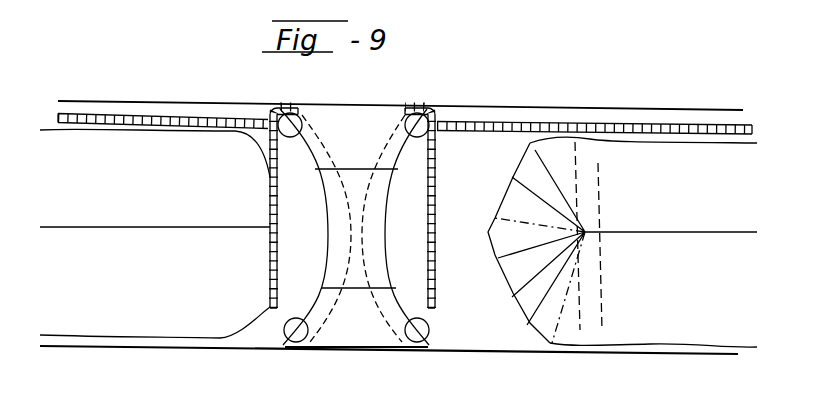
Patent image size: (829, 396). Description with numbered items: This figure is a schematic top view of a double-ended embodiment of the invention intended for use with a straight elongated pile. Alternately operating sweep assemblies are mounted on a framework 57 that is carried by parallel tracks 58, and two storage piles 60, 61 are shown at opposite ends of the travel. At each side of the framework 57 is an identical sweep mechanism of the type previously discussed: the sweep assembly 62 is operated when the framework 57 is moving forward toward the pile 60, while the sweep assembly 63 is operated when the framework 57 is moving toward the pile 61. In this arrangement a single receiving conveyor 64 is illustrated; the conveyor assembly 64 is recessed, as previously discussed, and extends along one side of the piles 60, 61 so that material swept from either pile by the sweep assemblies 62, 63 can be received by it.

The framework 57 is at (327, 222).
The parallel tracks 58 is at (409, 349).
The storage pile 60 is at (198, 206).
The storage pile 61 is at (688, 223).
The sweep assembly 62 is at (313, 302).
The sweep assembly 63 is at (407, 152).
The receiving conveyor 64 is at (500, 131).